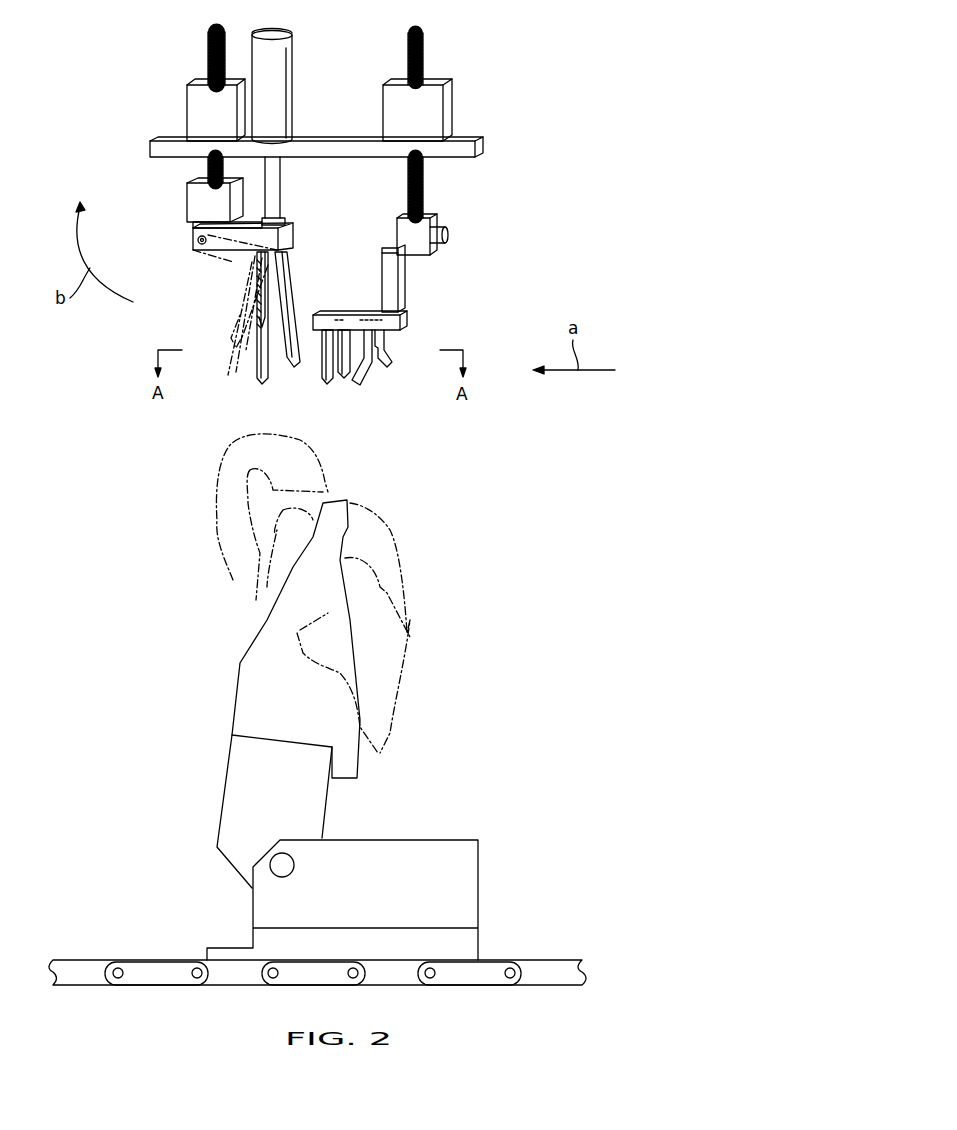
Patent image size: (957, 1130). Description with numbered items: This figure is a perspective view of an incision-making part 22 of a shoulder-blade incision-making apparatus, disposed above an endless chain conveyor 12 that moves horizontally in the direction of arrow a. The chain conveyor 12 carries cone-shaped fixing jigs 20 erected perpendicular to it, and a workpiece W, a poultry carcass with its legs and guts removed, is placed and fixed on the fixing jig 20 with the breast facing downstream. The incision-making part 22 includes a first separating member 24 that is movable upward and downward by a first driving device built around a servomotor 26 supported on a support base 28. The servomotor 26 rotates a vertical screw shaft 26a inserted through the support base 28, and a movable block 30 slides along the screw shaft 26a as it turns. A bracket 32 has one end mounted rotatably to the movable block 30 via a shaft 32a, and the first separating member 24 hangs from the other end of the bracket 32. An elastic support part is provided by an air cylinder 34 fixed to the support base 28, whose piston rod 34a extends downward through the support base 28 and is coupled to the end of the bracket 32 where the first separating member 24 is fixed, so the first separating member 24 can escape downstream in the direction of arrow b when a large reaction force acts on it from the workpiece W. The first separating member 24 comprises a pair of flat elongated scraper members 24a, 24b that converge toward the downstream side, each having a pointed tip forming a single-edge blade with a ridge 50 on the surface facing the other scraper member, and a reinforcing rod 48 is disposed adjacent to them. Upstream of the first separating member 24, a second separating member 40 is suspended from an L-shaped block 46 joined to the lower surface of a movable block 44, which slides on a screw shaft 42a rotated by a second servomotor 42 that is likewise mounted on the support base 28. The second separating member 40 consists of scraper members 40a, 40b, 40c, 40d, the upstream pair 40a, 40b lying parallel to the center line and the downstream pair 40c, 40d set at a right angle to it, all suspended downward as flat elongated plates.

The chain conveyor 12 is at (558, 958).
The fixing jig 20 is at (247, 697).
The incision-making part 22 is at (518, 62).
The first separating member 24 is at (214, 385).
The scraper member 24a is at (270, 374).
The scraper member 24b is at (287, 383).
The servomotor 26 is at (194, 111).
The screw shaft 26a is at (208, 168).
The support base 28 is at (336, 141).
The movable block 30 is at (202, 208).
The bracket 32 is at (210, 257).
The shaft 32a is at (197, 242).
The air cylinder 34 is at (278, 59).
The piston rod 34a is at (280, 182).
The second separating member 40 is at (430, 382).
The scraper member 40a is at (362, 378).
The scraper member 40b is at (378, 365).
The scraper member 40c is at (332, 383).
The scraper member 40d is at (343, 381).
The servomotor 42 is at (430, 113).
The screw shaft 42a is at (423, 185).
The movable block 44 is at (403, 232).
The L-shaped block 46 is at (402, 283).
The reinforcing rod 48 is at (255, 295).
The ridge 50 is at (288, 344).
The workpiece W is at (392, 531).